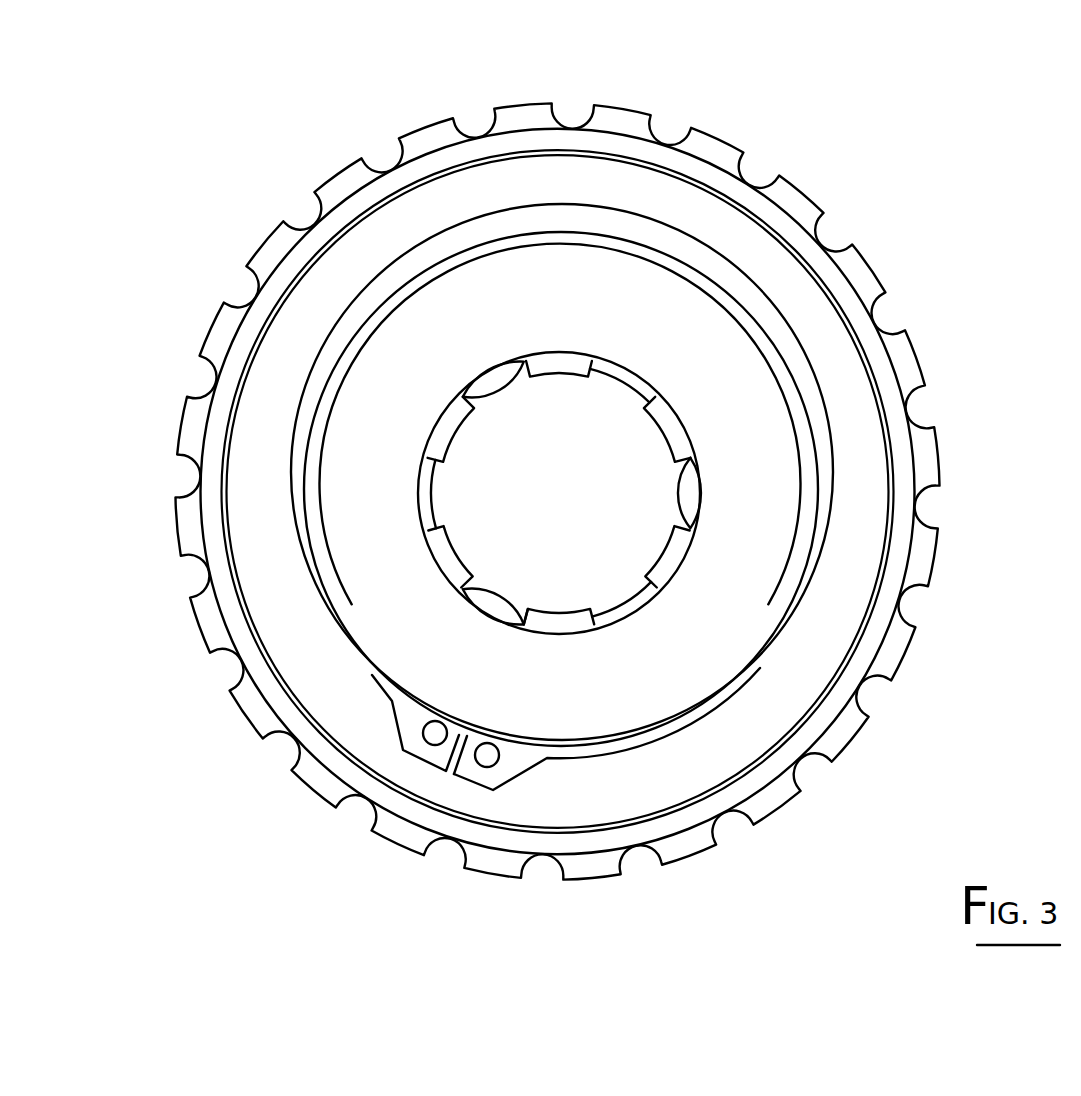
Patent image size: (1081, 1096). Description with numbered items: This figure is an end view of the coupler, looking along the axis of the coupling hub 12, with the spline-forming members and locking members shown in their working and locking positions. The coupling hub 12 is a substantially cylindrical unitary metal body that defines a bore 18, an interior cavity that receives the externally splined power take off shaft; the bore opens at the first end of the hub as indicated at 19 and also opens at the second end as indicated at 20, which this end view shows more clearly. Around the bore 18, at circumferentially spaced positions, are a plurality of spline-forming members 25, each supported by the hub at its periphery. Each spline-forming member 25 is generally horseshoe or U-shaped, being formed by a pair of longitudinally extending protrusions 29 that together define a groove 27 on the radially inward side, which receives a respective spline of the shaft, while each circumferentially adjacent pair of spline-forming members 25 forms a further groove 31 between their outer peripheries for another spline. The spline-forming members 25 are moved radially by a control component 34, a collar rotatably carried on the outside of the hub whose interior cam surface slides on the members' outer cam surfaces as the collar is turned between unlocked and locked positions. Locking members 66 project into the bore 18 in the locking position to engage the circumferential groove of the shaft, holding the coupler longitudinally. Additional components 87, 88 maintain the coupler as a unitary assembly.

The coupling hub 12 is at (746, 566).
The bore 18 is at (548, 467).
The bore opening at first end 19 is at (613, 362).
The bore opening at second end 20 is at (633, 380).
The spline-forming member 25 is at (562, 627).
The groove 27 is at (523, 613).
The protrusions 29 is at (459, 553).
The groove between spline-forming members 31 is at (626, 611).
The control component 34 is at (618, 105).
The locking member 66 is at (482, 586).
The additional component 87 is at (572, 812).
The additional component 88 is at (370, 673).